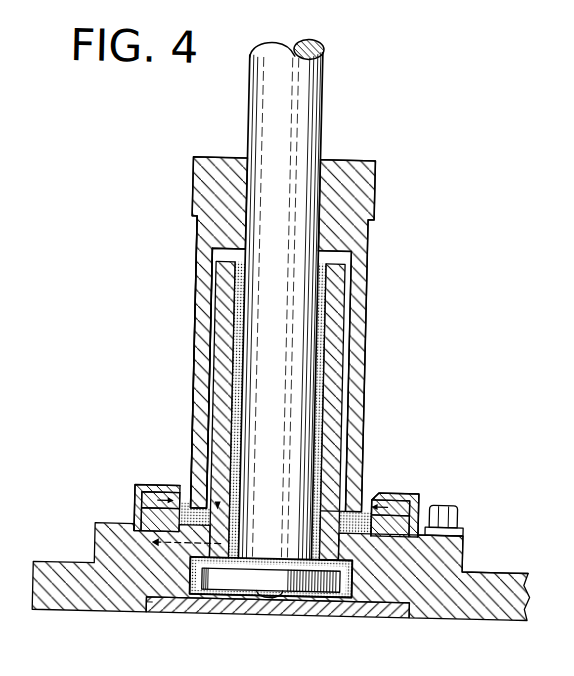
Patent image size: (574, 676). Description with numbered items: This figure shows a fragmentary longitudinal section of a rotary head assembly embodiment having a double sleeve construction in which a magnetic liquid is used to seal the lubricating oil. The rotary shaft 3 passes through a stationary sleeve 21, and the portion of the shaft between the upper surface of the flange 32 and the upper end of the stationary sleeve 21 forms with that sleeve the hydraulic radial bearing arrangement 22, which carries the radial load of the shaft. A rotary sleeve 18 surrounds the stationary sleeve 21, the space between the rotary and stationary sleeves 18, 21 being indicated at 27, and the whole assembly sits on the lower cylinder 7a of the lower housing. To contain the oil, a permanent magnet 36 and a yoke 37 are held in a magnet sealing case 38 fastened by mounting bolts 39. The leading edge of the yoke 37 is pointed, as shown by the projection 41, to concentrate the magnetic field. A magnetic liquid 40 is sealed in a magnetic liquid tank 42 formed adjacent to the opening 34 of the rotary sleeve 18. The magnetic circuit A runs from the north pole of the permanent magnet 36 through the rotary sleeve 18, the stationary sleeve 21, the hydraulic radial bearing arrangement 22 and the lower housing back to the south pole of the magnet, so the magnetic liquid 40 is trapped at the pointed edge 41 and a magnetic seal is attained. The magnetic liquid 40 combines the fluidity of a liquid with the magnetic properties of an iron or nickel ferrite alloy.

The rotary shaft 3 is at (314, 117).
The lower cylinder 7a is at (59, 592).
The rotary sleeve 18 is at (357, 338).
The stationary sleeve 21 is at (226, 323).
The hydraulic radial bearing arrangement 22 is at (238, 390).
The space between the rotary and stationary sleeves 27 is at (208, 430).
The flange 32 is at (237, 581).
The opening of the rotary sleeve 34 is at (344, 506).
The permanent magnet 36 is at (403, 534).
The yoke 37 is at (406, 505).
The magnet sealing case 38 is at (402, 491).
The mounting bolts 39 is at (450, 513).
The magnetic liquid 40 is at (370, 531).
The projection 41 is at (383, 498).
The magnetic liquid tank 42 is at (325, 539).
The magnetic circuit A is at (178, 495).